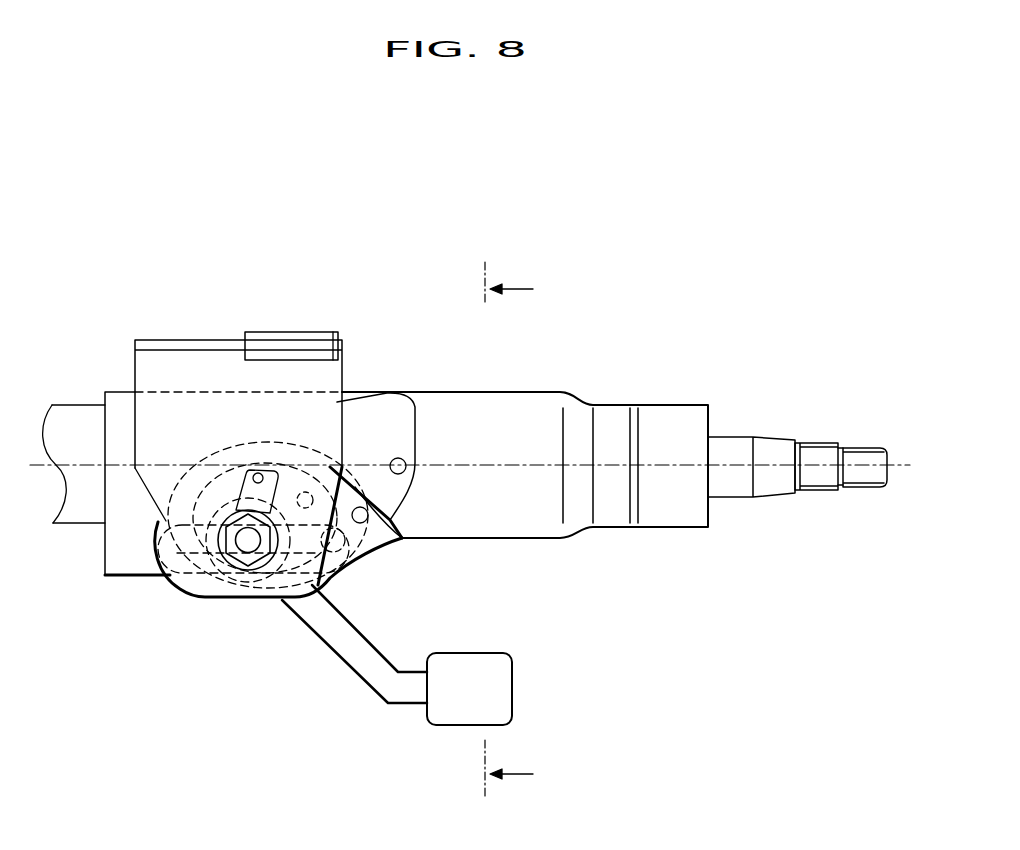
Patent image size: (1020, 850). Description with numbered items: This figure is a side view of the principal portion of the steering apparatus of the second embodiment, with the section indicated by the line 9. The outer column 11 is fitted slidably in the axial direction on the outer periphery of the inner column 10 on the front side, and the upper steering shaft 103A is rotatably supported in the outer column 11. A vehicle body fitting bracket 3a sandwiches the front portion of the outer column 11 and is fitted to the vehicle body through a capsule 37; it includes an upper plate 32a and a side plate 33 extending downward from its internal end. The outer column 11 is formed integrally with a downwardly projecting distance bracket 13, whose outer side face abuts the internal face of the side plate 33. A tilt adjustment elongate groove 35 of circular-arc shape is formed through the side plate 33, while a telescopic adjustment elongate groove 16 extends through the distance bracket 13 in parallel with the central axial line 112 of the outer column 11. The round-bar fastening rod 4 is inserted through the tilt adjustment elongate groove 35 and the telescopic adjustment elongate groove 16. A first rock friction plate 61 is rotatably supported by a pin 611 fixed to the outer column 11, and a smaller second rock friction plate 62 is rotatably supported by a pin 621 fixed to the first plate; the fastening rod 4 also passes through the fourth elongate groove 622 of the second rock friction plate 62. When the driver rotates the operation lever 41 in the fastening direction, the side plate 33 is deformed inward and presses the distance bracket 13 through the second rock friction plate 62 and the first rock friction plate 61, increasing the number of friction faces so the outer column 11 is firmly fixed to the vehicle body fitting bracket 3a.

The vehicle body fitting bracket 3a is at (212, 345).
The upper plate 32a is at (203, 347).
The capsule 37 is at (273, 335).
The tilt adjustment elongate groove 35 is at (250, 470).
The pin 621 is at (305, 492).
The first rock friction plate 61 is at (372, 415).
The pin 611 is at (400, 458).
The central axial line 112 is at (512, 465).
The upper steering shaft 103A is at (863, 458).
The telescopic adjustment elongate groove 16 is at (180, 525).
The fastening rod 4 is at (233, 517).
The inner column 10 is at (80, 505).
The distance bracket 13 is at (145, 555).
The side plate 33 is at (280, 590).
The second rock friction plate 62 is at (358, 490).
The fourth elongate groove 622 is at (340, 573).
The outer column 11 is at (525, 474).
The operation lever 41 is at (442, 713).
The section line FIG. 9 is at (509, 537).